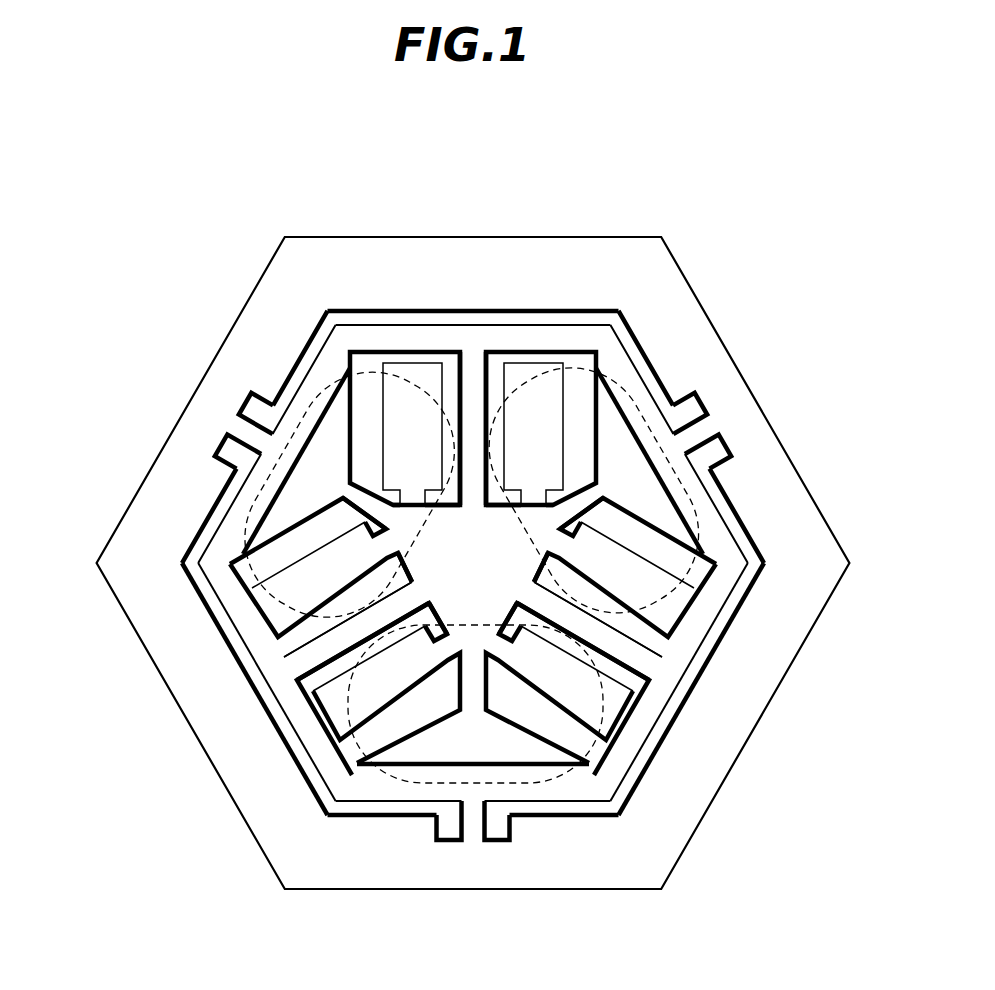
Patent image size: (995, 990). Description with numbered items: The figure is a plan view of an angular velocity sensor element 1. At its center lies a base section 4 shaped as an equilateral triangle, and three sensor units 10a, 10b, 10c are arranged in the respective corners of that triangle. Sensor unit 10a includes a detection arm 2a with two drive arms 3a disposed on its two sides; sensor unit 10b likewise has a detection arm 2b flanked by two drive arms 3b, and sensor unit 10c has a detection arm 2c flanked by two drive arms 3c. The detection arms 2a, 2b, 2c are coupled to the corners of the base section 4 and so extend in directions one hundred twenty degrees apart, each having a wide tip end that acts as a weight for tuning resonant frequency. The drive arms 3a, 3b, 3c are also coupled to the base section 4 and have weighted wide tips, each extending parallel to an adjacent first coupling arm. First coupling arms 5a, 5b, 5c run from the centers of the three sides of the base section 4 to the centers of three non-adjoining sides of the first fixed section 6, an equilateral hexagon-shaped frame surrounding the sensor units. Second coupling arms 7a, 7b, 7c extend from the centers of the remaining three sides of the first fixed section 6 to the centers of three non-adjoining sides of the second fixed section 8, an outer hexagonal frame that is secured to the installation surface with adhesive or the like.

The angular velocity sensor element 1 is at (58, 153).
The detection arm 2a is at (630, 474).
The detection arm 2b is at (320, 457).
The detection arm 2c is at (457, 737).
The drive arm 3a is at (547, 410).
The drive arm 3b is at (397, 400).
The drive arm 3c is at (313, 645).
The base section 4 is at (497, 573).
The first coupling arm 5a is at (463, 380).
The first coupling arm 5b is at (333, 708).
The first coupling arm 5c is at (640, 660).
The first fixed section 6 is at (602, 338).
The second coupling arm 7a is at (697, 428).
The second coupling arm 7b is at (243, 442).
The second coupling arm 7c is at (468, 817).
The second fixed section 8 is at (345, 265).
The sensor unit 10a is at (537, 378).
The sensor unit 10b is at (258, 565).
The sensor unit 10c is at (352, 765).